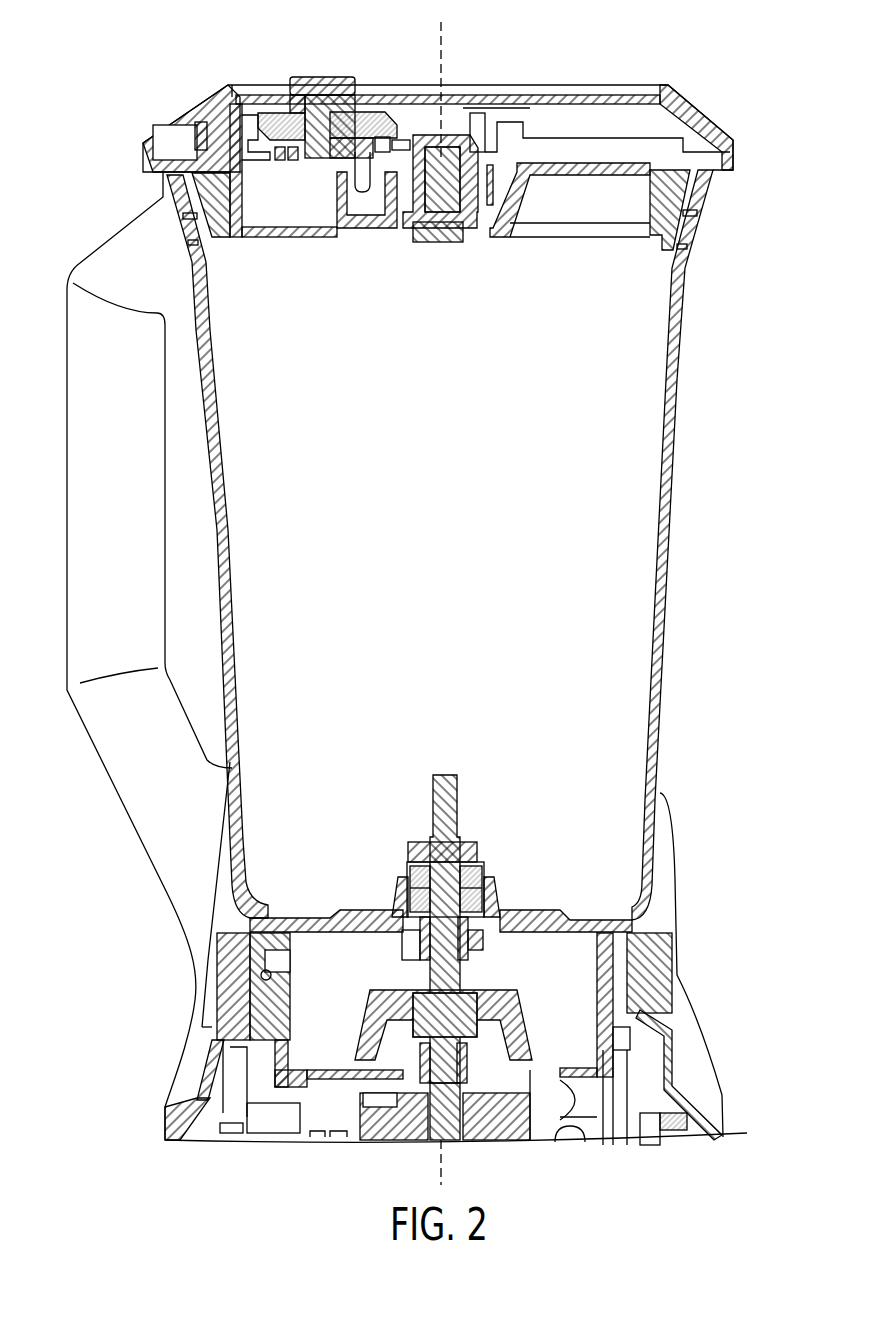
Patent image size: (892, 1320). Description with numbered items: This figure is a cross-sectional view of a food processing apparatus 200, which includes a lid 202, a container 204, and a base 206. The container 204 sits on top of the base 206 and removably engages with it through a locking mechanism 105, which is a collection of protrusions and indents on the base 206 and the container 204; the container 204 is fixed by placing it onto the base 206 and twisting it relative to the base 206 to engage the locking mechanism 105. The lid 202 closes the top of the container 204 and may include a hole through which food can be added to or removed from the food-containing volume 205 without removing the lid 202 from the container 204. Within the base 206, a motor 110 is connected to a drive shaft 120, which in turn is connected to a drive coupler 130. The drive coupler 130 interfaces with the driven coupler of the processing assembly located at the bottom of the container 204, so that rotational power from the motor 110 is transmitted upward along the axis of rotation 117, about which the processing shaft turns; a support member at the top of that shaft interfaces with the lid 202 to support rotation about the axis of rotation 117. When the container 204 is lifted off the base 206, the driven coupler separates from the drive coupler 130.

The food processing apparatus 200 is at (134, 75).
The lid 202 is at (697, 103).
The container 204 is at (240, 768).
The food-containing volume 205 is at (700, 240).
The base 206 is at (240, 1130).
The locking mechanism 105 is at (260, 976).
The motor 110 is at (515, 1137).
The axis of rotation 117 is at (443, 44).
The drive shaft 120 is at (457, 1107).
The drive coupler 130 is at (400, 1057).